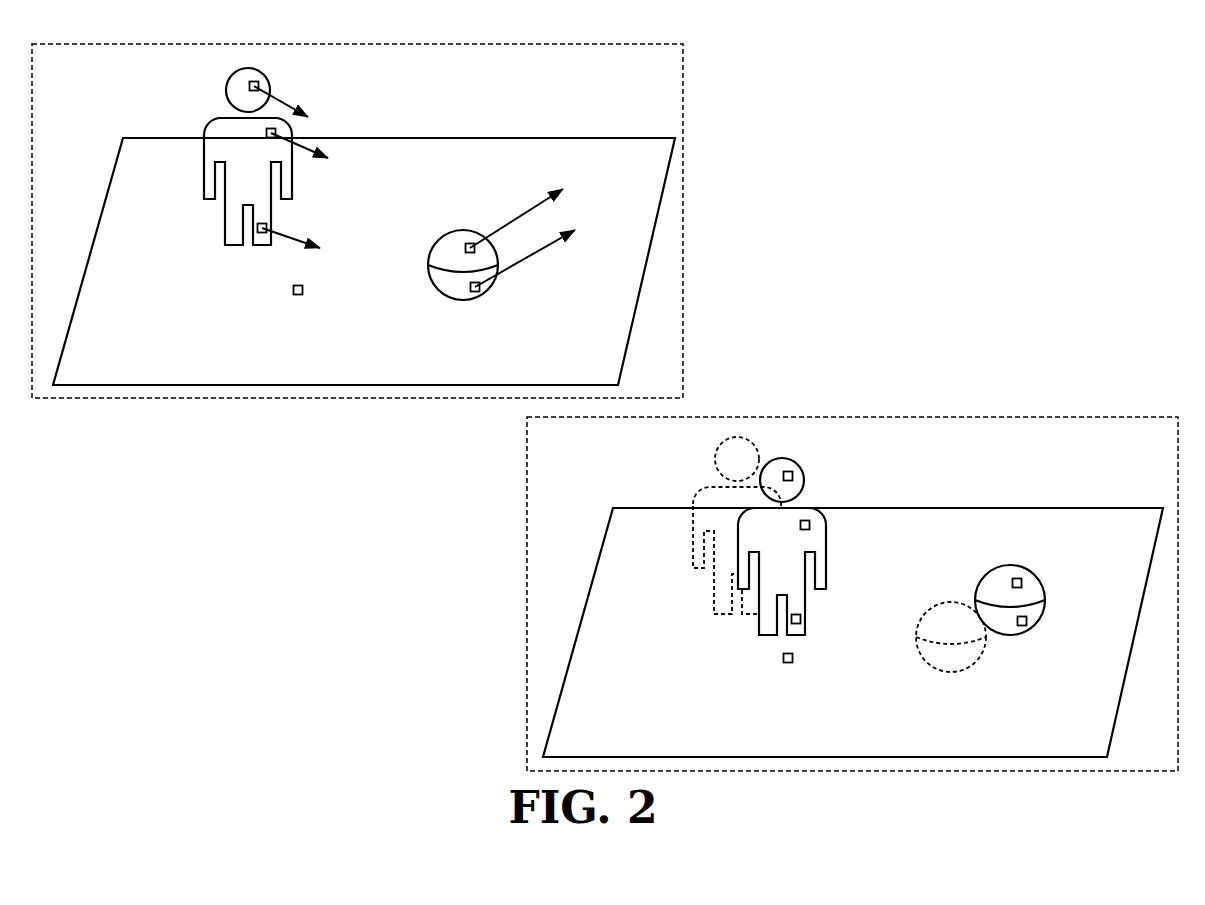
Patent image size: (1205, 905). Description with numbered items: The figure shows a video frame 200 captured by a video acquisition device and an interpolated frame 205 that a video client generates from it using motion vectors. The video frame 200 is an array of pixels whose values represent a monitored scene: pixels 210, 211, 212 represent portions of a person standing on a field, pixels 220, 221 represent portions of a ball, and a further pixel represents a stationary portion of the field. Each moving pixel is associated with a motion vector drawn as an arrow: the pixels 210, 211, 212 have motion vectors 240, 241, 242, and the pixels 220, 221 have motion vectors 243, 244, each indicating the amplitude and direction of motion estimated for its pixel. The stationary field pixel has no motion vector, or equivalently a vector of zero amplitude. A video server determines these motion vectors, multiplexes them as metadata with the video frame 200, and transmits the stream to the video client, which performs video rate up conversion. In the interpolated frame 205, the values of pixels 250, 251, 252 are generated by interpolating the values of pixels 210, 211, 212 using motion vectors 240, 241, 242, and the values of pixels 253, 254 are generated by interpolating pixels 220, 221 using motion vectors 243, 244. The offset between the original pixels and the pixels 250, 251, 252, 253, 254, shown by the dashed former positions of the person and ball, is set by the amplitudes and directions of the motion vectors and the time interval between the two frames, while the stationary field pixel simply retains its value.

The video frame 200 is at (684, 70).
The interpolated frame 205 is at (925, 417).
The pixel 210 is at (262, 85).
The pixel 211 is at (280, 136).
The pixel 212 is at (268, 228).
The pixel 220 is at (465, 245).
The pixel 221 is at (473, 295).
The motion vector 240 is at (280, 97).
The motion vector 241 is at (298, 153).
The motion vector 242 is at (290, 245).
The motion vector 243 is at (522, 203).
The motion vector 244 is at (523, 252).
The pixel 250 is at (797, 476).
The pixel 251 is at (810, 525).
The pixel 252 is at (800, 620).
The pixel 253 is at (1027, 583).
The pixel 254 is at (1027, 621).